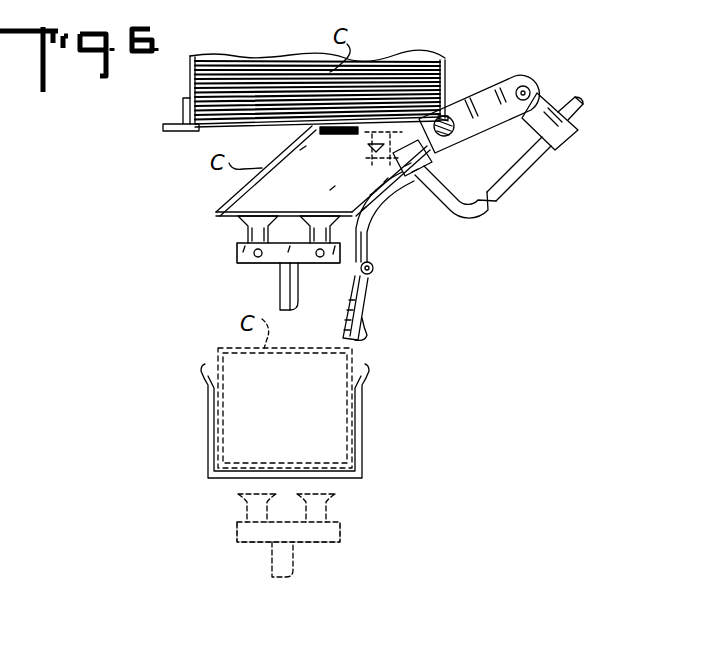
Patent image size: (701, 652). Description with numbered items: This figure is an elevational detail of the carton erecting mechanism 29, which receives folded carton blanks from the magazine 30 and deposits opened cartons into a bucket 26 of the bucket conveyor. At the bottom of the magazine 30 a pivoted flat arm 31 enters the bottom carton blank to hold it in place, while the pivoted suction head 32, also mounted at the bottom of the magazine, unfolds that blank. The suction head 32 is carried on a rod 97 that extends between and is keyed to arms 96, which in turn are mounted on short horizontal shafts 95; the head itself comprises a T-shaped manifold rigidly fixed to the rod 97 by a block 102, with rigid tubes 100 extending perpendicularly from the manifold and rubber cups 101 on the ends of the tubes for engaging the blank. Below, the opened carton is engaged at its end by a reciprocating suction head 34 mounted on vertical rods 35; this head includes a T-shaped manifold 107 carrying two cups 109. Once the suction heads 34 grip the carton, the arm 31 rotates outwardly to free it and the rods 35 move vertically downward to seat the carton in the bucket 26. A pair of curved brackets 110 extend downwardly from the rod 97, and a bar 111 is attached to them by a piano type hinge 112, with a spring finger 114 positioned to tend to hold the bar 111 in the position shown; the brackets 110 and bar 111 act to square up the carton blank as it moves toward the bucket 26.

The bucket 26 is at (209, 408).
The carton erecting mechanism 29 is at (558, 93).
The magazine 30 is at (447, 76).
The pivoted flat arms 31 is at (323, 171).
The pivoted suction head 32 is at (535, 162).
The reciprocating suction head 34 is at (258, 267).
The vertical rods 35 is at (283, 292).
The short horizontal shafts 95 is at (456, 114).
The arms 96 is at (497, 92).
The rod 97 is at (527, 91).
The rigid tubes 100 is at (507, 182).
The rubber cups 101 is at (370, 156).
The block 102 is at (578, 138).
The T-shaped manifold 107 is at (240, 248).
The cups 109 is at (320, 218).
The curved brackets 110 is at (368, 220).
The bar 111 is at (360, 338).
The piano type hinge 112 is at (373, 268).
The spring finger 114 is at (364, 318).